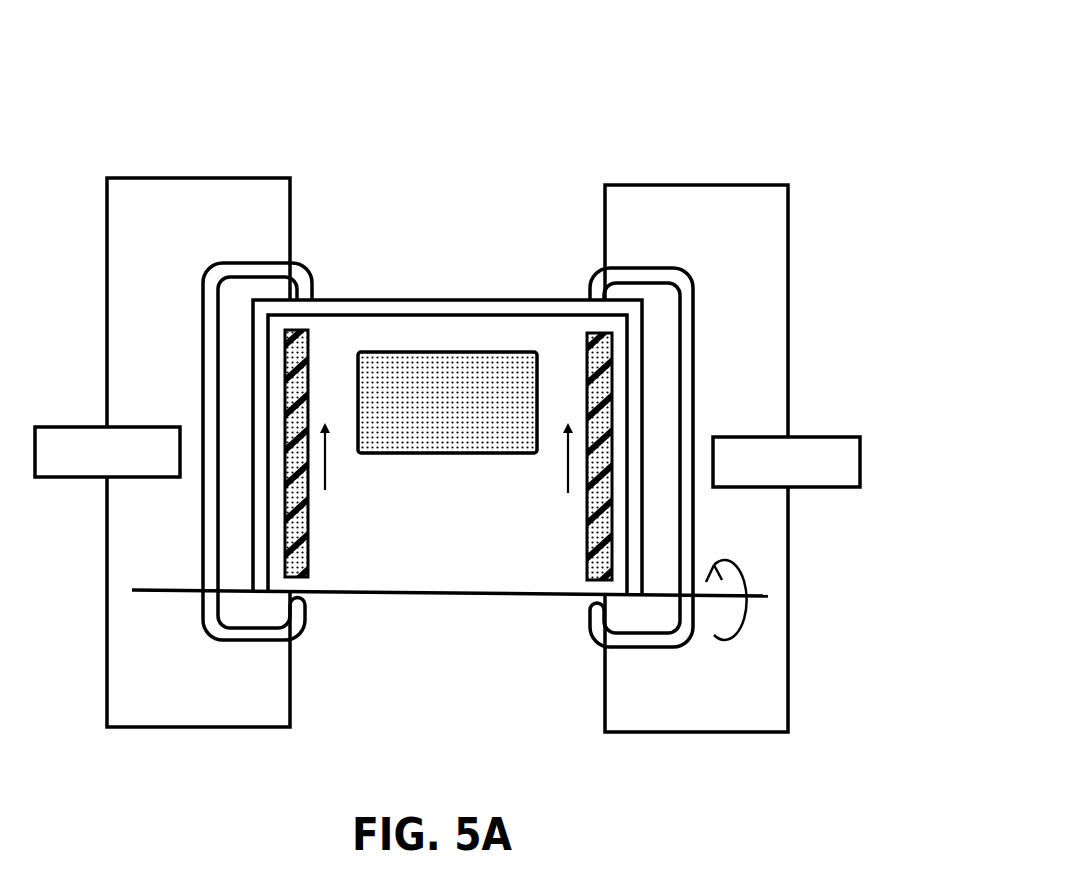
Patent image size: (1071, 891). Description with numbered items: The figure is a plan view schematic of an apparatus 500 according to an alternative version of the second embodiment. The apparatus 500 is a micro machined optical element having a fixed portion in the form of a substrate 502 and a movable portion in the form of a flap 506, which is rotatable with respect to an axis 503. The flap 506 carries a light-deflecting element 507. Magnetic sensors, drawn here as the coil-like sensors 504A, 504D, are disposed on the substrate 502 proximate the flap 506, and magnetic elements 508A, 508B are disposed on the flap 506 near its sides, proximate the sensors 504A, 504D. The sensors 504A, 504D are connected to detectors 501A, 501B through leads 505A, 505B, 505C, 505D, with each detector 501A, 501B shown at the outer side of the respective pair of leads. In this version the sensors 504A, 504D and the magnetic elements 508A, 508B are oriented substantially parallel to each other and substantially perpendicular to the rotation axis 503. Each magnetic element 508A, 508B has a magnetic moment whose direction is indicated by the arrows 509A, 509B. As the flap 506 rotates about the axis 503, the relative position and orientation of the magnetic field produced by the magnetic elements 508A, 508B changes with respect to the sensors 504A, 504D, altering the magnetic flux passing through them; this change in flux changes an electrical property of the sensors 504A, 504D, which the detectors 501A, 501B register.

The apparatus 500 is at (752, 95).
The detector 501A is at (137, 427).
The detector 501B is at (745, 437).
The substrate 502 is at (447, 414).
The axis 503 is at (762, 612).
The magnetic sensor 504A is at (260, 262).
The coil 504D is at (660, 268).
The lead 505A is at (162, 178).
The lead 505B is at (240, 727).
The lead 505C is at (697, 185).
The lead 505D is at (641, 732).
The flap 506 is at (468, 302).
The light-deflecting element 507 is at (432, 455).
The magnetic element 508A is at (310, 553).
The magnetic element 508B is at (578, 512).
The arrow 509A is at (328, 460).
The arrow 509B is at (566, 453).